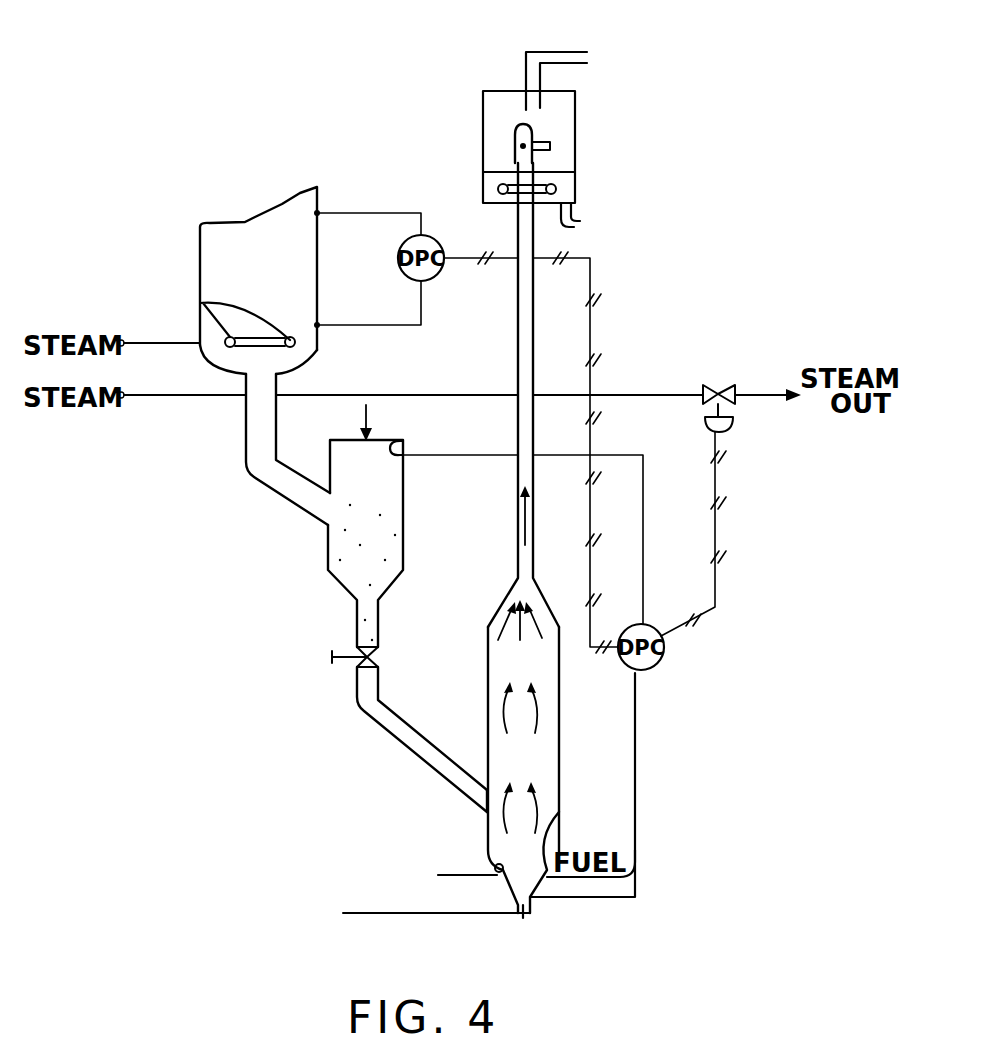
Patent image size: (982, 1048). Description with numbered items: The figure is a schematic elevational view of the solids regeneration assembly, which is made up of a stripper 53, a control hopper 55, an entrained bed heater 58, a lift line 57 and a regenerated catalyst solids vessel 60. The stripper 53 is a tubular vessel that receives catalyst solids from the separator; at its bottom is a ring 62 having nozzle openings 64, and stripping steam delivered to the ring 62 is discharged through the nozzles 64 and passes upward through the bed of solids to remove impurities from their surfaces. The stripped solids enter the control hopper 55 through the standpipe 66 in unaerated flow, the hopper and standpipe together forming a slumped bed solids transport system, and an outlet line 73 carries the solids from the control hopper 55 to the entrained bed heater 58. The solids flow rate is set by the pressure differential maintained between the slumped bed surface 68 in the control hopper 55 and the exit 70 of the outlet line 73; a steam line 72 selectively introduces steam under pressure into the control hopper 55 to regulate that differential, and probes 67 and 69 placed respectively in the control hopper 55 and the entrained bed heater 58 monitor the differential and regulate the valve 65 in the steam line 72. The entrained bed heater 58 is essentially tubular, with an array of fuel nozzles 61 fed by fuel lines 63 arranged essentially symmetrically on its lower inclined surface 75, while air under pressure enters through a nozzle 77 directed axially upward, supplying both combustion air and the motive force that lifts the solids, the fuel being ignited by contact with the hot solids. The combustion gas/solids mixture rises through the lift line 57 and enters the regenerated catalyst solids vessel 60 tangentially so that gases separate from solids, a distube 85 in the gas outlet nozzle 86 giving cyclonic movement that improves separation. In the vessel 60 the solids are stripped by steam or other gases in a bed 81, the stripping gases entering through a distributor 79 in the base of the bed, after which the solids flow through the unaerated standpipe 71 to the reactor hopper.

The stripper 53 is at (200, 236).
The control hopper 55 is at (395, 478).
The lift line 57 is at (517, 560).
The entrained bed heater 58 is at (543, 718).
The regenerated catalyst solids vessel 60 is at (483, 135).
The fuel nozzles 61 is at (536, 899).
The ring 62 is at (293, 344).
The fuel lines 63 is at (650, 842).
The nozzle openings 64 is at (200, 303).
The valve 65 is at (723, 388).
The standpipe 66 is at (258, 441).
The probe 67 is at (397, 447).
The slumped bed surface 68 is at (378, 547).
The probe 69 is at (531, 897).
The exit 70 is at (477, 810).
The standpipe 71 is at (581, 224).
The steam line 72 is at (398, 395).
The outlet line 73 is at (395, 720).
The lower inclined surface 75 is at (493, 875).
The nozzle 77 is at (522, 916).
The distributor 79 is at (557, 189).
The bed 81 is at (549, 165).
The distube 85 is at (535, 108).
The gas outlet nozzle 86 is at (533, 49).